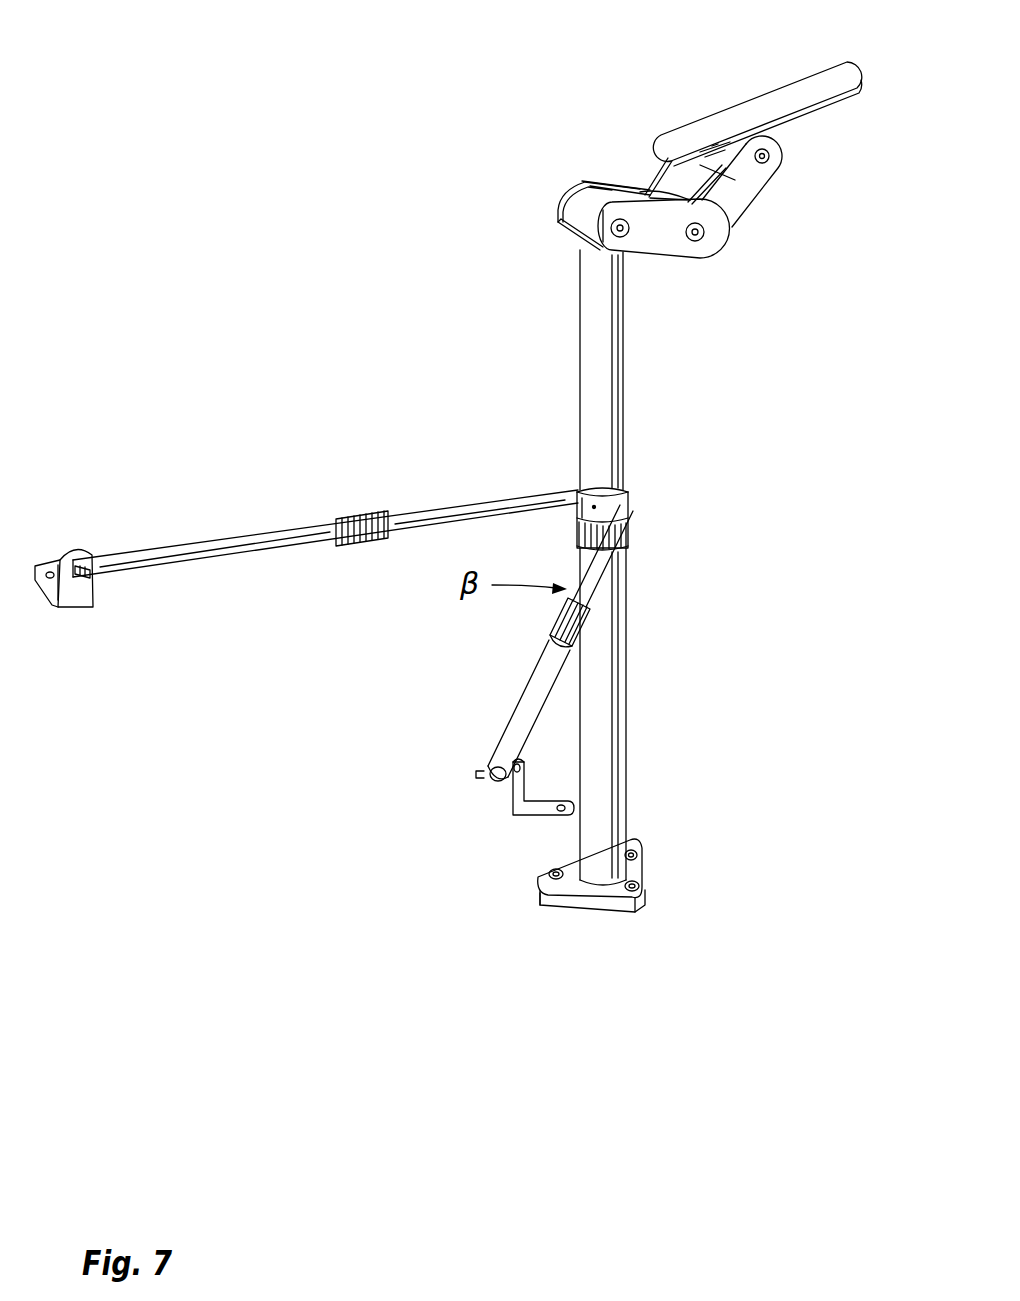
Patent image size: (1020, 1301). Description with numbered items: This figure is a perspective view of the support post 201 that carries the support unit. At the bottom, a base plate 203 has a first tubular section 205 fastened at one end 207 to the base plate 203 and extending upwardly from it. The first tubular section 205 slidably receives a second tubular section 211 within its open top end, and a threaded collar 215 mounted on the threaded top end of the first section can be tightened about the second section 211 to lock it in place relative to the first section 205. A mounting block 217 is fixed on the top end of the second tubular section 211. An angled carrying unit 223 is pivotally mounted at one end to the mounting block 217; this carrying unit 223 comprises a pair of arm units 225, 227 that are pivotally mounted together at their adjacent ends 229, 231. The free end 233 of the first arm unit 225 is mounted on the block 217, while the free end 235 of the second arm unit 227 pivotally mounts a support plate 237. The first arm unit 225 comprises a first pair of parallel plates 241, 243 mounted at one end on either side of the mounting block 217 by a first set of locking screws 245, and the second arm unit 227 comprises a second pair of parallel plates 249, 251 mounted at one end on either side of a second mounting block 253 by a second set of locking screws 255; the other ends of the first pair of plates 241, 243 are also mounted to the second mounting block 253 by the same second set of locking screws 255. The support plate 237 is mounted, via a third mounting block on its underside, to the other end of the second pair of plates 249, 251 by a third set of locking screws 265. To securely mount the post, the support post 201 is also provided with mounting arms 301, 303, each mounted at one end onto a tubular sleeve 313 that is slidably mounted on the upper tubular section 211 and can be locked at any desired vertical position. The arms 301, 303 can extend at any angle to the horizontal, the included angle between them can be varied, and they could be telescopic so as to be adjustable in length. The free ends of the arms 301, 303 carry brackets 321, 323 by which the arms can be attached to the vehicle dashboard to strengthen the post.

The support post 201 is at (683, 661).
The base plate 203 is at (566, 898).
The first tubular section 205 is at (634, 764).
The one end 207 is at (660, 884).
The second tubular section 211 is at (683, 446).
The threaded collar 215 is at (577, 538).
The mounting block 217 is at (586, 207).
The angled carrying unit 223 is at (747, 220).
The first arm unit 225 is at (697, 273).
The second arm unit 227 is at (783, 171).
The adjacent end 229 is at (712, 212).
The adjacent end 231 is at (640, 190).
The free end 233 is at (565, 218).
The free end 235 is at (780, 145).
The support plate 237 is at (752, 87).
The first parallel plate 241 is at (653, 247).
The first parallel plate 243 is at (620, 192).
The first set of locking screws 245 is at (618, 238).
The second parallel plate 249 is at (678, 182).
The second parallel plate 251 is at (660, 192).
The second mounting block 253 is at (647, 192).
The second set of locking screws 255 is at (698, 234).
The third set of locking screws 265 is at (732, 180).
The mounting arm 301 is at (506, 746).
The mounting arm 303 is at (236, 525).
The tubular sleeve 313 is at (630, 493).
The bracket 321 is at (546, 812).
The bracket 323 is at (75, 556).